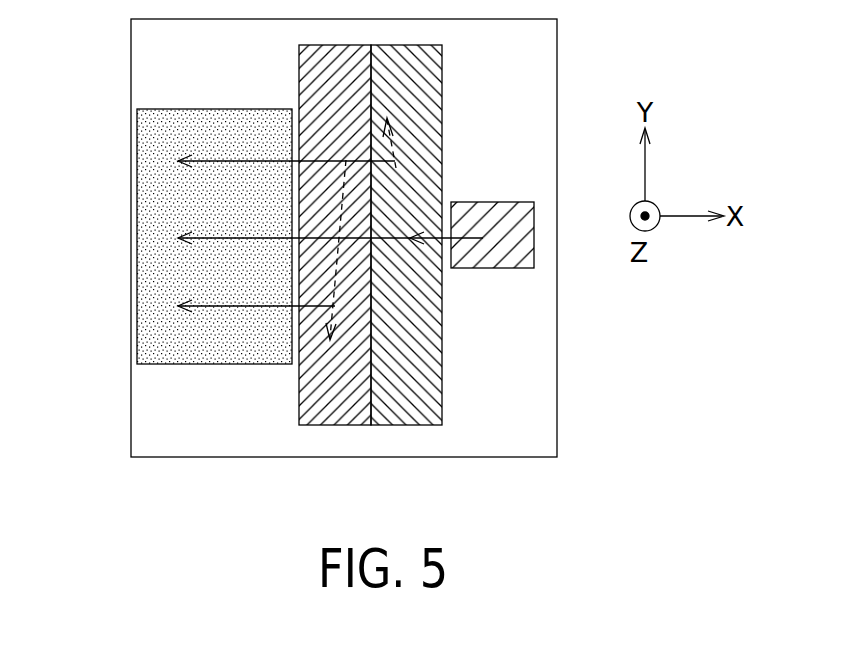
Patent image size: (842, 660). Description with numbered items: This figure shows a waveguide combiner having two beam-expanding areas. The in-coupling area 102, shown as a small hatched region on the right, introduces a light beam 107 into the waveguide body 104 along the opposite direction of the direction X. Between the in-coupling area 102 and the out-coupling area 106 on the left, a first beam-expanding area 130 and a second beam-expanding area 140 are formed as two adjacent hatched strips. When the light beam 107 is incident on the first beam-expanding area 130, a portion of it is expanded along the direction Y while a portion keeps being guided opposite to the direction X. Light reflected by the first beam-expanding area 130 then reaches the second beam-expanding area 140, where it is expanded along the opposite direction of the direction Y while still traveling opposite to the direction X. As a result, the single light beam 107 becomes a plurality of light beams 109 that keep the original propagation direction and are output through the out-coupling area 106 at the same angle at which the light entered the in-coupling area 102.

The in-coupling area 102 is at (534, 258).
The waveguide body 104 is at (131, 58).
The out-coupling area 106 is at (158, 192).
The light beam 107 is at (462, 240).
The light beams 109 is at (228, 307).
The first beam-expanding area 130 is at (403, 426).
The second beam-expanding area 140 is at (323, 426).